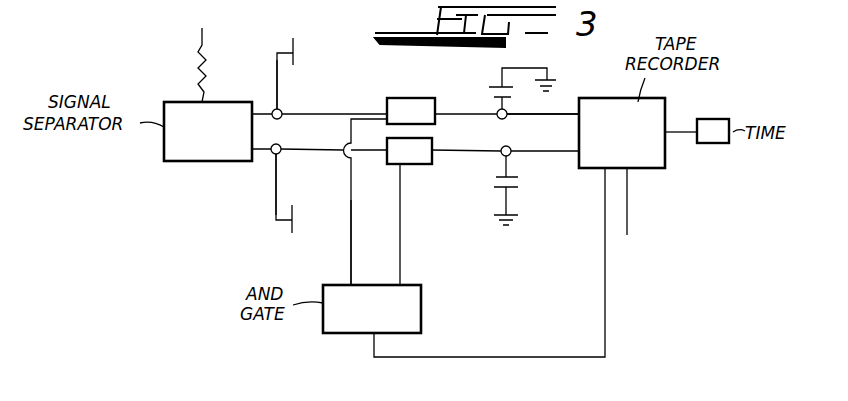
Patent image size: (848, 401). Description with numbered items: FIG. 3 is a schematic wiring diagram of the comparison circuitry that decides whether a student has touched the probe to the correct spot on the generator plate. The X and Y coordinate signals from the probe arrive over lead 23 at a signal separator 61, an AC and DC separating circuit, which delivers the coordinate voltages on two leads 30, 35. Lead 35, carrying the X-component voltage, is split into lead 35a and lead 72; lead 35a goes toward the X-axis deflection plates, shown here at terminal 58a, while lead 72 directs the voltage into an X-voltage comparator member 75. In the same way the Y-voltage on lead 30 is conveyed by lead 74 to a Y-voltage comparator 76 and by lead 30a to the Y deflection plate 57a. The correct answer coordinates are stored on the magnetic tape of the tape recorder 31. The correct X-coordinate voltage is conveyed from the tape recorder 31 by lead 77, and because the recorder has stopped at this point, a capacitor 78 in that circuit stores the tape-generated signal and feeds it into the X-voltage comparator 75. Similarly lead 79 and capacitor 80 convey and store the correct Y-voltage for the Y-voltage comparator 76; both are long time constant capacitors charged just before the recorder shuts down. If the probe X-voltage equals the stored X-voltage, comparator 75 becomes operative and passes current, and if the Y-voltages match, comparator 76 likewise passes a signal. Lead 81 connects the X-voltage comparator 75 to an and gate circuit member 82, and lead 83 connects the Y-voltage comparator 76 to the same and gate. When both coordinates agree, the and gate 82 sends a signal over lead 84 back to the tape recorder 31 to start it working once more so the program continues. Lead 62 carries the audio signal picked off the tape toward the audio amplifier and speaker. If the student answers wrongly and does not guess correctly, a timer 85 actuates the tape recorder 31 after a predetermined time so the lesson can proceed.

The lead 23 is at (205, 50).
The signal separator 61 is at (218, 142).
The lead 35 is at (265, 110).
The terminal / switch contact 58a is at (295, 45).
The lead 35a is at (280, 88).
The lead 72 is at (336, 114).
The X-voltage comparator member 75 is at (406, 108).
The capacitor 78 is at (491, 90).
The lead 77 is at (557, 113).
The tape recorder 31 is at (633, 144).
The timer 85 is at (708, 128).
The lead 30 is at (262, 155).
The lead 30a is at (278, 196).
The Y deflection plate 57a is at (292, 210).
The lead 74 is at (365, 153).
The Y-voltage comparator 76 is at (410, 143).
The lead 79 is at (537, 152).
The capacitor 80 is at (493, 180).
The lead 81 is at (352, 270).
The lead 83 is at (401, 270).
The and gate circuit member 82 is at (349, 314).
The lead 84 is at (512, 357).
The lead 62 is at (628, 214).